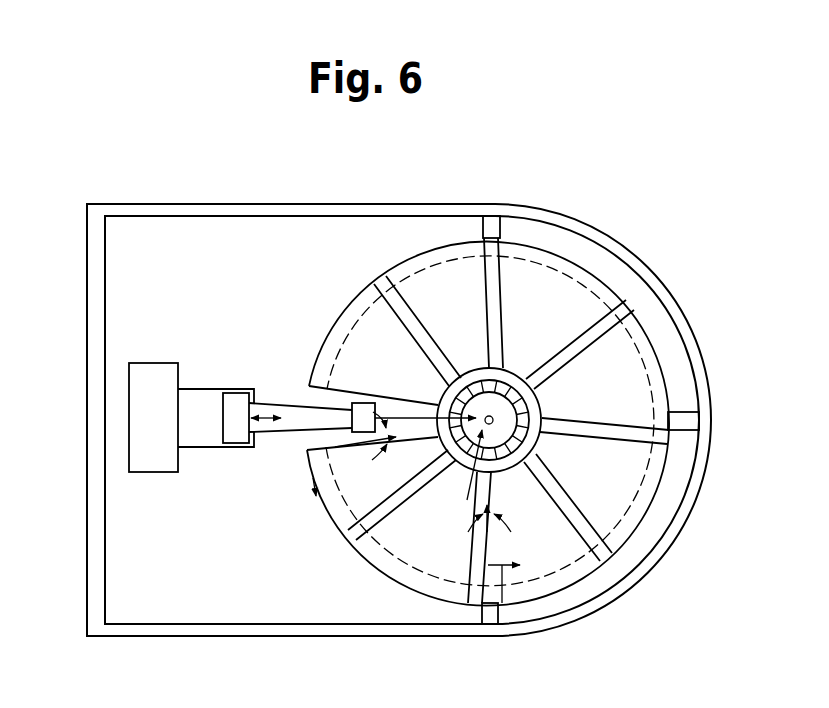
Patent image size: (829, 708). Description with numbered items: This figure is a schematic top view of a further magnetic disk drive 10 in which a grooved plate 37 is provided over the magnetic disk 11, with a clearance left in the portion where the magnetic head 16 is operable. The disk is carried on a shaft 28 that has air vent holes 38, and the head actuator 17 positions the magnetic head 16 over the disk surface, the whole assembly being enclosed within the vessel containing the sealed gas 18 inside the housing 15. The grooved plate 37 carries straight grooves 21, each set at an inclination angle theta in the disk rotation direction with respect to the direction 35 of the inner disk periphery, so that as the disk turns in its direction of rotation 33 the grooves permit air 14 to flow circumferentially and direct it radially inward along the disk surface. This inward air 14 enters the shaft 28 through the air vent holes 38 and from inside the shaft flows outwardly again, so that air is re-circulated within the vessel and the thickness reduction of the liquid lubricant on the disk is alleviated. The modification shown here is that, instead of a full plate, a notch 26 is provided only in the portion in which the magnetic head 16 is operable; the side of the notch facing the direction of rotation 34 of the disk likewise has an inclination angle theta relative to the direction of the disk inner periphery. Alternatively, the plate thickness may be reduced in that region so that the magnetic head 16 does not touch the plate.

The magnetic disk drive 10 is at (217, 186).
The magnetic disk 11 is at (441, 256).
The air 14 is at (452, 457).
The housing 15 is at (93, 545).
The magnetic head 16 is at (240, 432).
The head actuator 17 is at (140, 425).
The sealed gas 18 is at (140, 237).
The straight groove 21 is at (590, 540).
The notch 26 is at (312, 400).
The shaft 28 is at (541, 445).
The direction of rotation 33 is at (412, 437).
The direction of rotation 34 is at (314, 482).
The direction of the inner disk periphery 35 is at (486, 510).
The grooved plate 37 is at (586, 282).
The air vent holes 38 is at (522, 392).